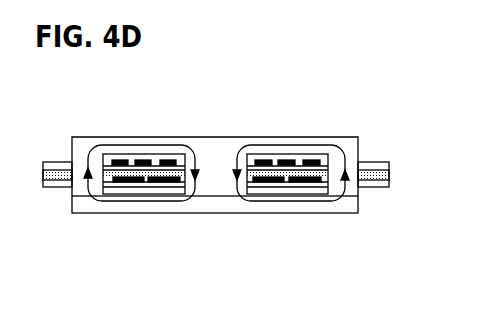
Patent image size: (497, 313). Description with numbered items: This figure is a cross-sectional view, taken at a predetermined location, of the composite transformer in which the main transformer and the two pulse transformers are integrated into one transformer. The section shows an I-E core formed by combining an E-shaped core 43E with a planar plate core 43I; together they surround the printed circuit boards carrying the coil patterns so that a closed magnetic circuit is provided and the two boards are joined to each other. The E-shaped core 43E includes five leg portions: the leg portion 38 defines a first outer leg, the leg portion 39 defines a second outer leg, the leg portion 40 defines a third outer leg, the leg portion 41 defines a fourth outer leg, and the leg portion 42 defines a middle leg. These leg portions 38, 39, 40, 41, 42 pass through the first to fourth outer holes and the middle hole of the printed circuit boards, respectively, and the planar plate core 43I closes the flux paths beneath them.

The leg portion 38 is at (68, 132).
The leg portion 39 is at (83, 146).
The leg portion 40 is at (363, 132).
The leg portion 41 is at (347, 147).
The leg portion 42 is at (216, 173).
The E-shaped core 43E is at (217, 140).
The planar plate core 43I is at (220, 208).